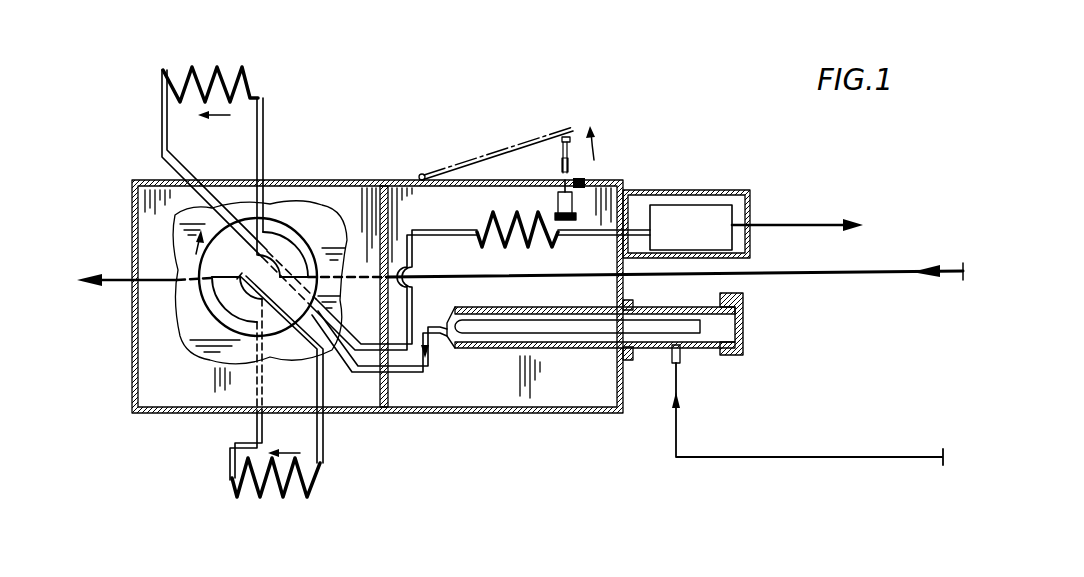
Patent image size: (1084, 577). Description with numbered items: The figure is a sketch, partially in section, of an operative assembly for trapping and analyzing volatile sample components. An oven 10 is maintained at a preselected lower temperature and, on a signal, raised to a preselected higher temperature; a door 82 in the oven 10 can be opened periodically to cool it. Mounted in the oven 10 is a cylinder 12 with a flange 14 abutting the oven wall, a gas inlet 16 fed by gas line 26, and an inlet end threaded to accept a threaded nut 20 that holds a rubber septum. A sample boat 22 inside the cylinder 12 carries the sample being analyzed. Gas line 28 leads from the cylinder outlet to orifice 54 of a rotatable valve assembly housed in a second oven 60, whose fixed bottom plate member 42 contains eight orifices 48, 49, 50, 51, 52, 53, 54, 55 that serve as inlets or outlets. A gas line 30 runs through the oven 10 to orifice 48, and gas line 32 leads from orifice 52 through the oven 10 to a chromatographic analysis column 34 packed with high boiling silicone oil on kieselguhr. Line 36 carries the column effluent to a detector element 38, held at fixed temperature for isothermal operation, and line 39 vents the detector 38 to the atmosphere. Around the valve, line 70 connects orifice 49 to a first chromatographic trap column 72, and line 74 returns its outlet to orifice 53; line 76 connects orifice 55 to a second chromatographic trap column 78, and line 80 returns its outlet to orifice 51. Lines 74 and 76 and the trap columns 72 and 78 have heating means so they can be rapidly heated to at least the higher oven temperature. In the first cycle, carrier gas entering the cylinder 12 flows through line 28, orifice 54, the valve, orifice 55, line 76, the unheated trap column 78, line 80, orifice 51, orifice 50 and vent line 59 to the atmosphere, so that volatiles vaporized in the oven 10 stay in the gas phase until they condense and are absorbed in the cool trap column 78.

The oven 10 is at (607, 180).
The cylinder 12 is at (498, 306).
The flange 14 is at (633, 365).
The gas inlet 16 is at (682, 362).
The threaded nut 20 is at (747, 325).
The sample boat 22 is at (580, 333).
The gas line 26 is at (680, 427).
The gas line 28 is at (430, 377).
The gas line 30 is at (910, 270).
The gas line 32 is at (414, 303).
The chromatographic analysis column 34 is at (483, 220).
The line 36 is at (607, 226).
The detector element 38 is at (715, 200).
The line 39 is at (813, 222).
The fixed bottom plate member 42 is at (192, 255).
The orifice 48 is at (346, 242).
The orifice 49 is at (266, 232).
The orifice 50 is at (213, 282).
The orifice 51 is at (262, 340).
The orifice 52 is at (287, 266).
The orifice 53 is at (289, 244).
The orifice 54 is at (248, 300).
The orifice 55 is at (255, 320).
The line 59 is at (115, 285).
The oven 60 is at (347, 193).
The line 70 is at (264, 150).
The first chromatographic trap column 72 is at (192, 66).
The line 74 is at (162, 125).
The line 76 is at (323, 443).
The second chromatographic trap column 78 is at (281, 497).
The line 80 is at (230, 458).
The door 82 is at (508, 176).